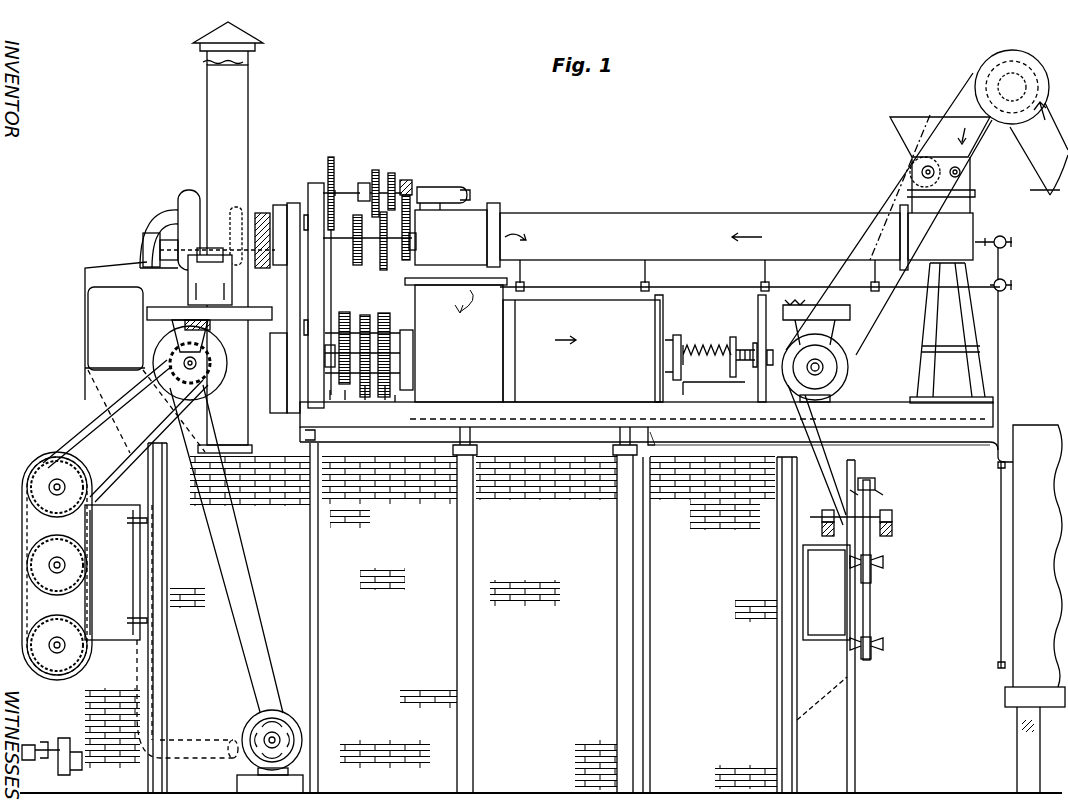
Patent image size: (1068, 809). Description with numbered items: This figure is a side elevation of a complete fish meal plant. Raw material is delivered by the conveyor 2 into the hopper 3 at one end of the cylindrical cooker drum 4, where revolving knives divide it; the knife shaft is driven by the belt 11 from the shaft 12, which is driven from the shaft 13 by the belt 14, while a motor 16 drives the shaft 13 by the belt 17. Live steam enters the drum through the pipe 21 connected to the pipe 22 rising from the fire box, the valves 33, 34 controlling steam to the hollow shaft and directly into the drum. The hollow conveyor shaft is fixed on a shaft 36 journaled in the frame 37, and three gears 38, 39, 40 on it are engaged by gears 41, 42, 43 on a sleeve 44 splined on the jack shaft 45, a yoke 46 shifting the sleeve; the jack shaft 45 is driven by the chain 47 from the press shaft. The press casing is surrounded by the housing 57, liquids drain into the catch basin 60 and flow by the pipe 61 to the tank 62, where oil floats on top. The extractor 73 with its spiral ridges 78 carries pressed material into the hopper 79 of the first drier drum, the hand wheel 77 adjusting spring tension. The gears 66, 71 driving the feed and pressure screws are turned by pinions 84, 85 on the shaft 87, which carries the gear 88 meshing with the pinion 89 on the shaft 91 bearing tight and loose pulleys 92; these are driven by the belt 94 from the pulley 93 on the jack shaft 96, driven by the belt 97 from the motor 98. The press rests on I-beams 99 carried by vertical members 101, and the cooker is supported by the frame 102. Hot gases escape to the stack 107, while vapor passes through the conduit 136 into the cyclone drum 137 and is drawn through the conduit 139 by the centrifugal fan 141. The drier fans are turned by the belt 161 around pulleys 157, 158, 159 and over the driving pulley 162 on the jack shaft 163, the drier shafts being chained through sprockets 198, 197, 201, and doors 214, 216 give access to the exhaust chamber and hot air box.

The conveyor 2 is at (1045, 135).
The hopper 3 is at (930, 146).
The cooker drum 4 is at (620, 244).
The belt 11 is at (905, 187).
The shaft 12 is at (830, 366).
The shaft 13 is at (185, 362).
The belt 14 is at (752, 404).
The motor 16 is at (252, 728).
The belt 17 is at (202, 545).
The pipe 21 is at (686, 290).
The pipe 22 is at (1000, 342).
The valve 33 is at (1001, 236).
The valve 34 is at (1003, 282).
The shaft 36 is at (370, 240).
The frame 37 is at (314, 192).
The gear 38 is at (356, 224).
The gear 39 is at (383, 261).
The gear 40 is at (410, 263).
The gear 41 is at (377, 183).
The gear 42 is at (392, 175).
The gear 43 is at (412, 187).
The sleeve 44 is at (405, 195).
The jack shaft 45 is at (340, 191).
The yoke 46 is at (365, 183).
The chain 47 is at (331, 160).
The housing 57 is at (620, 354).
The catch basin 60 is at (508, 412).
The pipe 61 is at (918, 443).
The tank 62 is at (1049, 540).
The gear 66 is at (385, 392).
The gear 71 is at (365, 392).
The extractor 73 is at (681, 344).
The hand wheel 77 is at (734, 340).
The spirally-disposed ridges 78 is at (672, 345).
The hopper 79 is at (745, 384).
The pinion 84 is at (390, 340).
The pinion 85 is at (380, 341).
The shaft 87 is at (335, 337).
The gear 88 is at (357, 331).
The pinion 89 is at (345, 392).
The shaft 91 is at (330, 392).
The tight and loose pulleys 92 is at (283, 413).
The pulley 93 is at (278, 222).
The belt 94 is at (292, 312).
The jack shaft 96 is at (233, 212).
The belt 97 is at (180, 240).
The motor 98 is at (210, 276).
The I-beams 99 is at (395, 402).
The vertical members 101 is at (313, 595).
The frame 102 is at (935, 325).
The stack 107 is at (250, 132).
The conduit 136 is at (93, 334).
The cyclone drum 137 is at (90, 275).
The conduit 139 is at (152, 218).
The centrifugal fan 141 is at (188, 190).
The pulley 157 is at (875, 484).
The pulley 158 is at (872, 566).
The pulley 159 is at (875, 642).
The belt 161 is at (872, 600).
The driving pulley 162 is at (882, 514).
The jack shaft 163 is at (826, 512).
The sprocket 197 is at (57, 565).
The sprocket 198 is at (57, 487).
The sprocket 201 is at (57, 645).
The door 214 is at (132, 584).
The door 216 is at (843, 605).